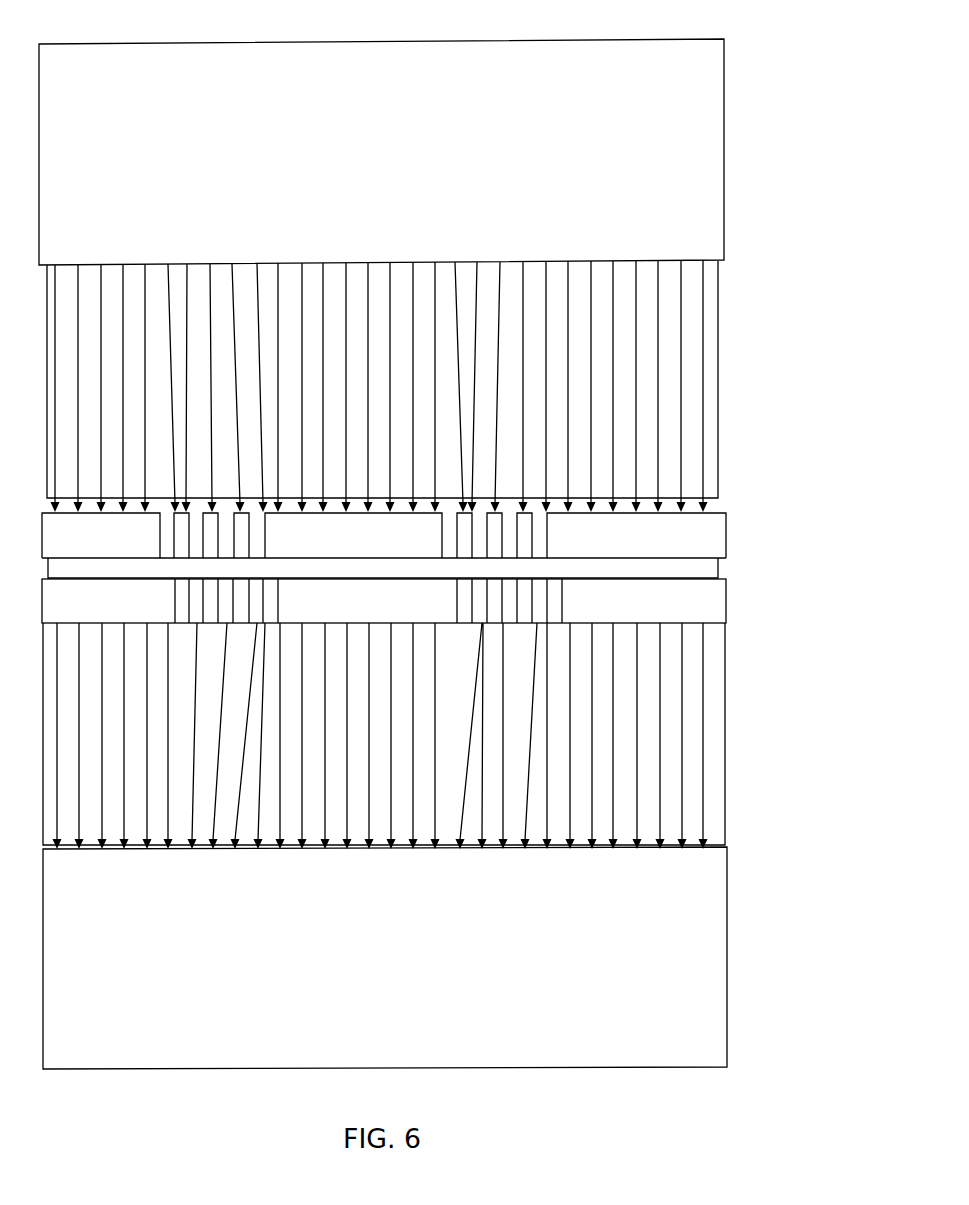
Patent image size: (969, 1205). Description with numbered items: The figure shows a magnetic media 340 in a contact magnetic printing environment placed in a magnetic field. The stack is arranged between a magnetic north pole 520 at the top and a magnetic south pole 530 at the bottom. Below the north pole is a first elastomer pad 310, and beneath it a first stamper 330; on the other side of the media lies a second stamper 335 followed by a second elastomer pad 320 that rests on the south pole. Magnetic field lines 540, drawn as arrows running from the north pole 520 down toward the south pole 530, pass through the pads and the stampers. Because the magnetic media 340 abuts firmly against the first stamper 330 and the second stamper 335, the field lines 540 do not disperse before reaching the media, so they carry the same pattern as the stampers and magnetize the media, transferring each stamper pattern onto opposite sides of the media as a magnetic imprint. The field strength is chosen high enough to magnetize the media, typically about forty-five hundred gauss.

The magnetic north pole 520 is at (724, 146).
The magnetic field lines 540 is at (682, 308).
The first elastomer pad 310 is at (718, 365).
The first stamper 330 is at (726, 528).
The magnetic media 340 is at (718, 563).
The second stamper 335 is at (726, 602).
The second elastomer pad 320 is at (725, 732).
The magnetic south pole 530 is at (727, 953).